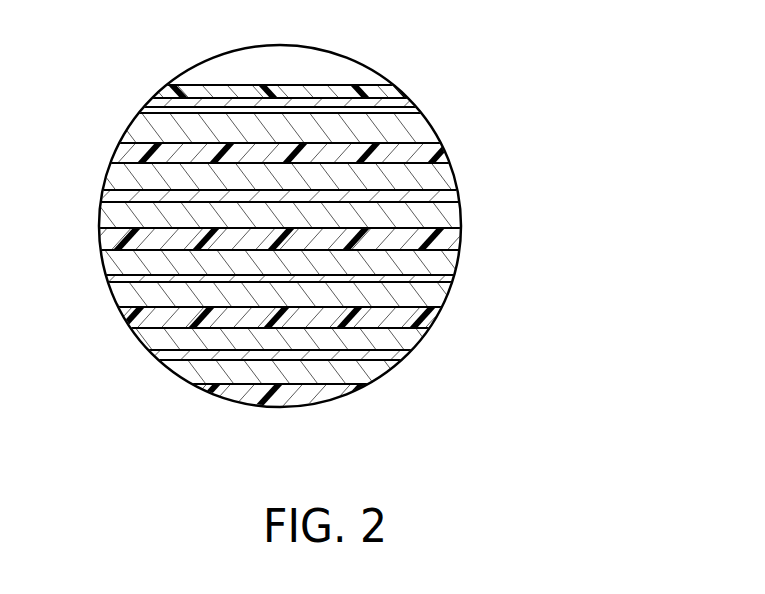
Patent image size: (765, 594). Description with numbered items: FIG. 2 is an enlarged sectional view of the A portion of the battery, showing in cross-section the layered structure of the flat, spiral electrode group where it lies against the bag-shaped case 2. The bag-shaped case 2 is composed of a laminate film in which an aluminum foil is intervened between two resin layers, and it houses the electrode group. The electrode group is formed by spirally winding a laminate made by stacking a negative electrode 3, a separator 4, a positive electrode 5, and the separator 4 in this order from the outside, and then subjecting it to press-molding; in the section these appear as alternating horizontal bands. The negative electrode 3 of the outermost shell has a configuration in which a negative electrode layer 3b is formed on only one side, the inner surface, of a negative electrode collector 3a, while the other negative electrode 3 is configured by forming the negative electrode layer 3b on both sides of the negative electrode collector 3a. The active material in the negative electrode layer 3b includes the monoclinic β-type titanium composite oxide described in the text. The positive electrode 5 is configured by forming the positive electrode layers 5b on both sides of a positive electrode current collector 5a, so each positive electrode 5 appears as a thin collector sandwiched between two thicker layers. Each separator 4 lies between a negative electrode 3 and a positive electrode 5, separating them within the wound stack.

The A portion A is at (196, 74).
The bag-shaped case 2 is at (398, 92).
The negative electrode 3 is at (503, 62).
The negative electrode collector 3a is at (412, 108).
The negative electrode layer 3b is at (418, 127).
The separator 4 is at (123, 152).
The positive electrode 5 is at (529, 137).
The positive electrode current collector 5a is at (443, 195).
The positive electrode layer 5b is at (440, 168).